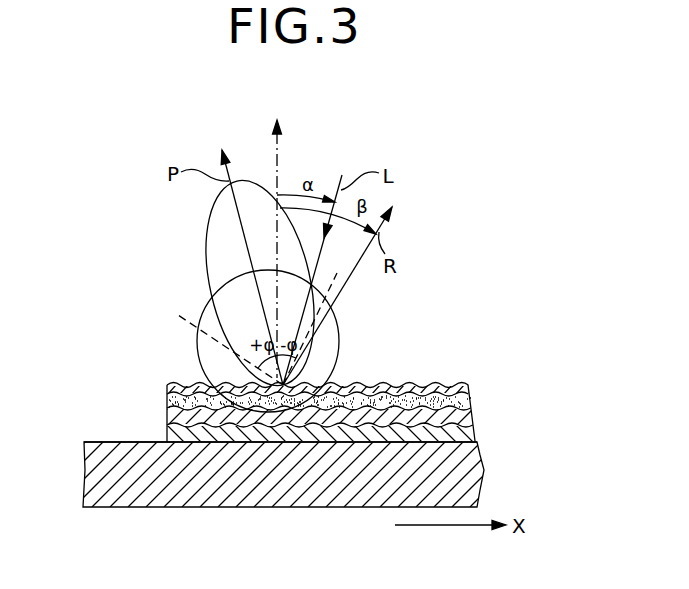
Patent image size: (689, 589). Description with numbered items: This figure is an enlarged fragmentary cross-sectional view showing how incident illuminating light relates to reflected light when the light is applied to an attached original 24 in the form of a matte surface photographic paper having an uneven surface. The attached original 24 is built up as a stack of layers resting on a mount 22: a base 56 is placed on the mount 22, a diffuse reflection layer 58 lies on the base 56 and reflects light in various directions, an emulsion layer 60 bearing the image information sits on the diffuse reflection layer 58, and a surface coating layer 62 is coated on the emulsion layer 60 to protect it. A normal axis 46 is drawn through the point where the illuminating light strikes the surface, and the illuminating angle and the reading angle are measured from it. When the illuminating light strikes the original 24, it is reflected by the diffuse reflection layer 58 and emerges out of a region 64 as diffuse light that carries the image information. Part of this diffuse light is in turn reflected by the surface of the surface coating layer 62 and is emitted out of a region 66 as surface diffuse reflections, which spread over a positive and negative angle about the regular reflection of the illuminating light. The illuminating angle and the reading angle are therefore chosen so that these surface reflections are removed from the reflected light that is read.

The mount 22 is at (252, 498).
The attached original 24 is at (319, 401).
The normal axis 46 is at (278, 184).
The base 56 is at (472, 437).
The diffuse reflection layer 58 is at (470, 420).
The emulsion layer 60 is at (473, 402).
The surface coating layer 62 is at (468, 385).
The region 64 is at (339, 352).
The region 66 is at (200, 262).